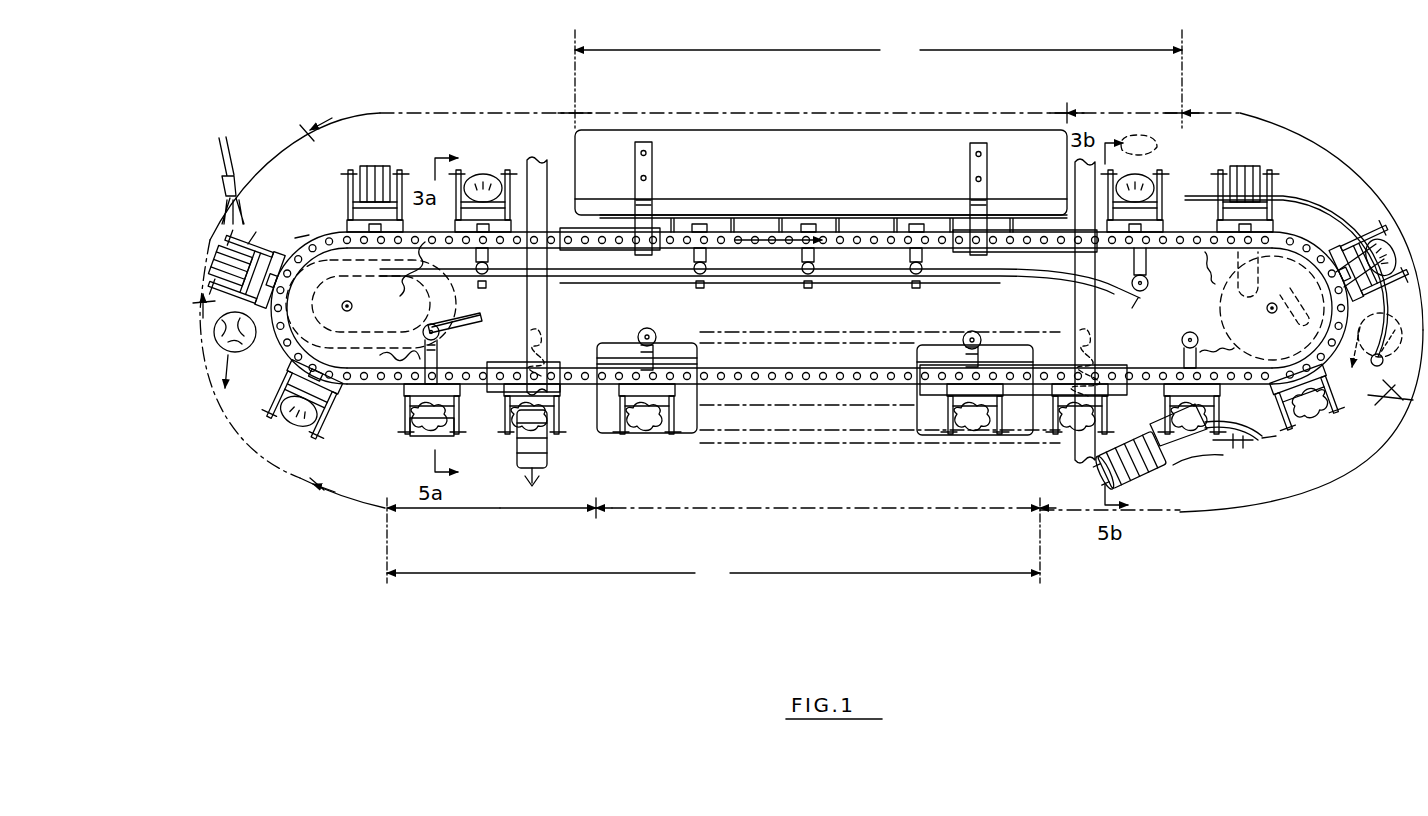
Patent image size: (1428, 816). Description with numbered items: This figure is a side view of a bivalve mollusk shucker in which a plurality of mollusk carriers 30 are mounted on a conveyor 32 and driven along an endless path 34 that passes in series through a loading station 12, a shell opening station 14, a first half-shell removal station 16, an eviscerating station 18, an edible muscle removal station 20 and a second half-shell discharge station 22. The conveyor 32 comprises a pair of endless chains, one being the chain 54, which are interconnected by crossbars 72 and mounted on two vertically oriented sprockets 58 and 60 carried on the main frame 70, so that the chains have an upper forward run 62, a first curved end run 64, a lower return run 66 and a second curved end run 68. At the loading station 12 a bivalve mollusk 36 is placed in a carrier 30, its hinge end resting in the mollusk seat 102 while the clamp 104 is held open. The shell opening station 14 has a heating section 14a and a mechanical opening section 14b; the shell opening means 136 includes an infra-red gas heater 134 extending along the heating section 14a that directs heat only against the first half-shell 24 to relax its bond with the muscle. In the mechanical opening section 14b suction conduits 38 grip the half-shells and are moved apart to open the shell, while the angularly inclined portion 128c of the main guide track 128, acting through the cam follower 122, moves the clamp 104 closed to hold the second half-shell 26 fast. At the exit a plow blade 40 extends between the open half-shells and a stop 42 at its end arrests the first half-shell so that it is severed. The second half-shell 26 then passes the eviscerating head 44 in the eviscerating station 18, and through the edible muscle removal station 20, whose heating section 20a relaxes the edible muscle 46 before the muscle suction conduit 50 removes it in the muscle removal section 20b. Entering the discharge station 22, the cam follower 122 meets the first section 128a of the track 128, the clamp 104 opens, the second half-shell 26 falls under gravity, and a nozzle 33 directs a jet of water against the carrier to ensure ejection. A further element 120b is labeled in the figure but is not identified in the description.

The loading station 12 is at (725, 164).
The shell opening station 14 is at (878, 79).
The heating section 14a is at (821, 105).
The mechanical opening section 14b is at (1150, 100).
The first half-shell removal station 16 is at (1331, 221).
The eviscerating station 18 is at (1231, 430).
The edible muscle removal station 20 is at (713, 541).
The heating section 20a is at (826, 524).
The muscle removal section 20b is at (491, 517).
The second half-shell discharge station 22 is at (289, 374).
The first half-shell 24 is at (1338, 325).
The second half-shell 26 is at (244, 334).
The mollusk carrier 30 is at (398, 170).
The conveyor 32 is at (322, 236).
The nozzle 33 is at (238, 190).
The endless path 34 is at (748, 238).
The bivalve mollusk 36 is at (481, 188).
The suction conduits 38 is at (1142, 149).
The plow blade 40 is at (1333, 203).
The stop 42 is at (1389, 396).
The eviscerating head 44 is at (1175, 470).
The edible muscle 46 is at (522, 416).
The muscle suction conduit 50 is at (553, 460).
The endless chain 54 is at (303, 250).
The sprocket 58 is at (408, 314).
The sprocket 60 is at (1235, 324).
The upper forward run 62 is at (855, 230).
The first curved end run 64 is at (1330, 252).
The lower return run 66 is at (750, 390).
The second curved end run 68 is at (290, 352).
The main frame 70 is at (548, 308).
The crossbars 72 is at (488, 256).
The mollusk seat 102 is at (405, 401).
The clamp 104 is at (410, 430).
The rail section 120b is at (657, 285).
The cam follower 122 is at (428, 292).
The main guide track 128 is at (378, 258).
The first section 128a is at (452, 322).
The angularly inclined portion 128c is at (1112, 306).
The infra-red gas heater 134 is at (813, 164).
The shell opening means 136 is at (932, 162).